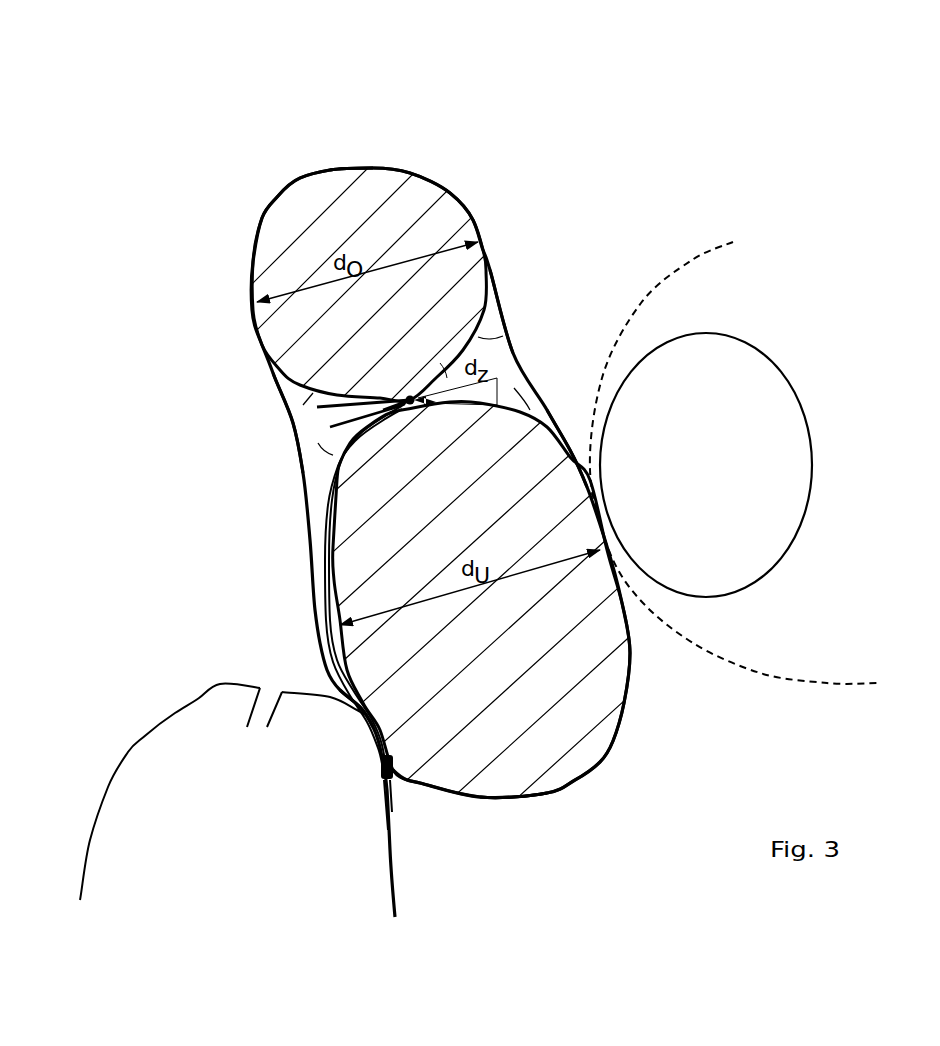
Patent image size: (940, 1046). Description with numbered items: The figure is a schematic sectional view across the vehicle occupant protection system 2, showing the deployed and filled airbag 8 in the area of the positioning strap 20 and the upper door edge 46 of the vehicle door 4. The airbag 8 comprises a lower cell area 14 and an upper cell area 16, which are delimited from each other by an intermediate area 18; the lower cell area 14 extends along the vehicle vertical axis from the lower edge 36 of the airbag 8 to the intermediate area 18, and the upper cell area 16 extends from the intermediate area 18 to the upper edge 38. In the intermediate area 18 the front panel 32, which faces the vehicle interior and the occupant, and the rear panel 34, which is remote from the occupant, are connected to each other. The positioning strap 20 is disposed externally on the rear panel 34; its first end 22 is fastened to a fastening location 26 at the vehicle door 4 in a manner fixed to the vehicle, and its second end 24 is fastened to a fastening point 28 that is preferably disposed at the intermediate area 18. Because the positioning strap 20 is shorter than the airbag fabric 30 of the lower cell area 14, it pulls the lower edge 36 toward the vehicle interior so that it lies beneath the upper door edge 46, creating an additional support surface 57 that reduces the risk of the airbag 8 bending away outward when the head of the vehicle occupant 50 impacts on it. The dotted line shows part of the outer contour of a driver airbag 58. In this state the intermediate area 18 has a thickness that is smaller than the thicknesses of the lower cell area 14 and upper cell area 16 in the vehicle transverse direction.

The vehicle occupant protection system 2 is at (212, 188).
The vehicle door 4 is at (183, 823).
The airbag 8 is at (388, 167).
The lower cell area 14 is at (500, 722).
The upper cell area 16 is at (403, 213).
The intermediate area 18 is at (383, 410).
The positioning strap 20 is at (327, 533).
The first end 22 is at (383, 797).
The second end 24 is at (317, 402).
The fastening location 26 is at (380, 773).
The fastening point 28 is at (475, 333).
The airbag fabric 30 is at (320, 482).
The front panel 32 is at (520, 380).
The rear panel 34 is at (313, 458).
The lower edge 36 is at (528, 793).
The upper edge 38 is at (335, 172).
The upper door edge 46 is at (288, 692).
The vehicle occupant 50 is at (760, 422).
The additional support surface 57 is at (357, 735).
The driver airbag 58 is at (693, 265).